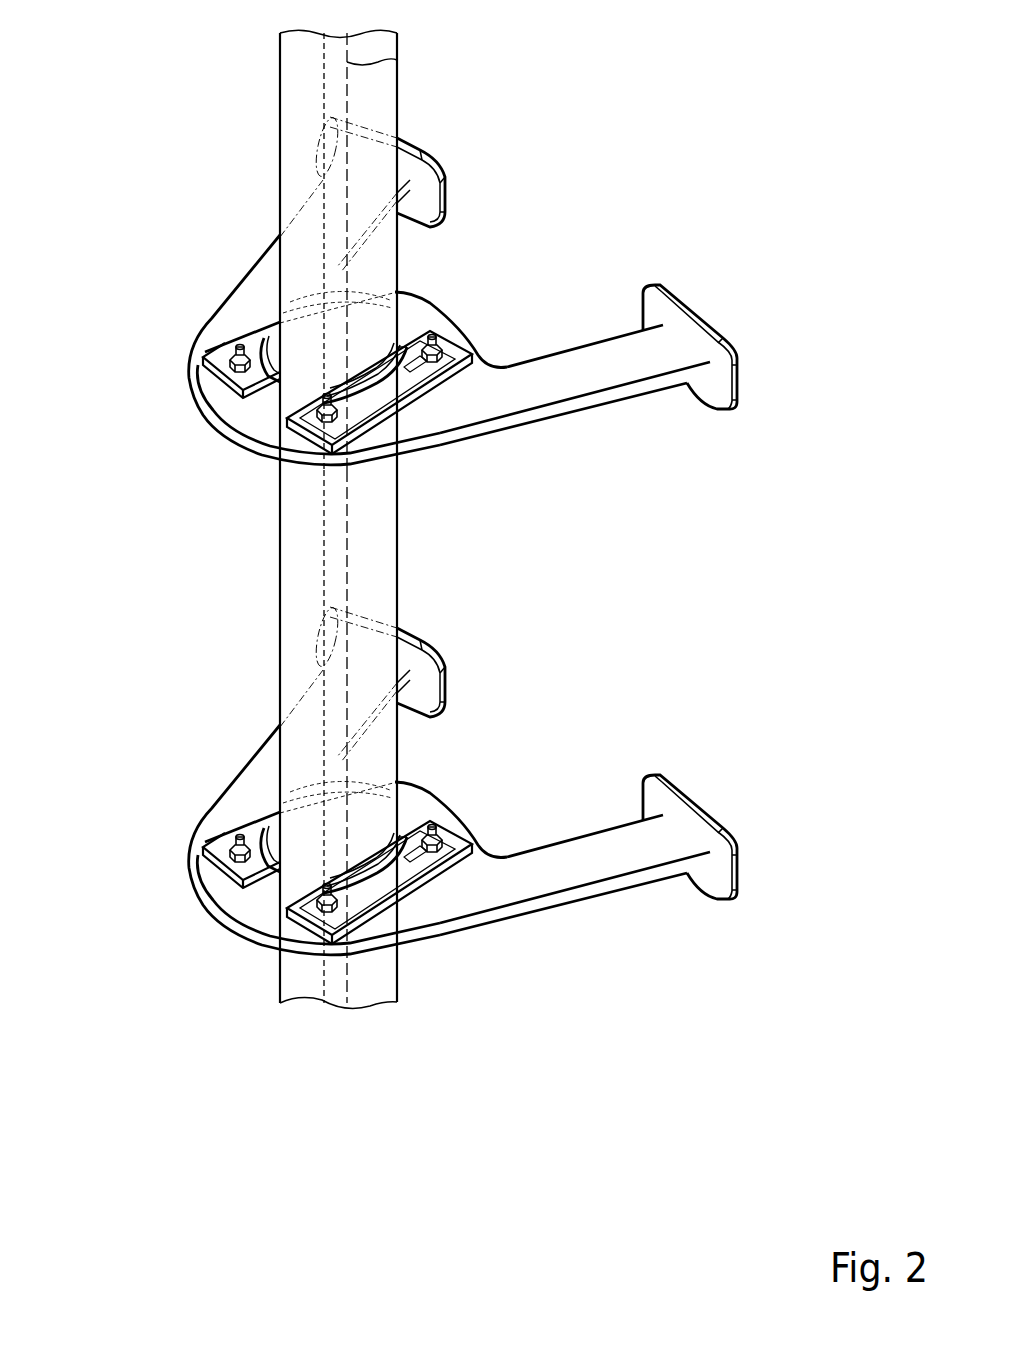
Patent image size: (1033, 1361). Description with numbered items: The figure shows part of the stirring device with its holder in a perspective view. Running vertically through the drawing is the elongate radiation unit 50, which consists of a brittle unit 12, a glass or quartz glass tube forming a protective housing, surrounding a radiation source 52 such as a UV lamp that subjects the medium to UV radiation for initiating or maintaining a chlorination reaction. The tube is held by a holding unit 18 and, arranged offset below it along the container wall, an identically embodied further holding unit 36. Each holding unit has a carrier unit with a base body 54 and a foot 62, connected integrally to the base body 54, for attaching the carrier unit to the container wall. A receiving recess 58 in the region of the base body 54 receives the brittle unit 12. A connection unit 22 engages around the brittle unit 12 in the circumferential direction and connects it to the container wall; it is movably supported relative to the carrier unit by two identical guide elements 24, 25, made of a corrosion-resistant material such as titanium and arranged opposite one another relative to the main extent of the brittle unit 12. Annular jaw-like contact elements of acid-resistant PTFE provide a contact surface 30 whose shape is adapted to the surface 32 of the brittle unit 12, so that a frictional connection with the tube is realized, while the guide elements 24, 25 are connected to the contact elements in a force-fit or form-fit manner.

The brittle unit 12 is at (280, 91).
The radiation source 52 is at (400, 60).
The radiation unit 50 is at (456, 314).
The receiving recess 58 is at (378, 357).
The holding unit 18 is at (456, 328).
The guide element 25 is at (218, 352).
The guide element 24 is at (447, 366).
The connection unit 22 is at (268, 402).
The contact surface 30 is at (380, 403).
The base body 54 is at (572, 405).
The foot 62 is at (740, 372).
The surface 32 is at (301, 568).
The further holding unit 36 is at (183, 897).